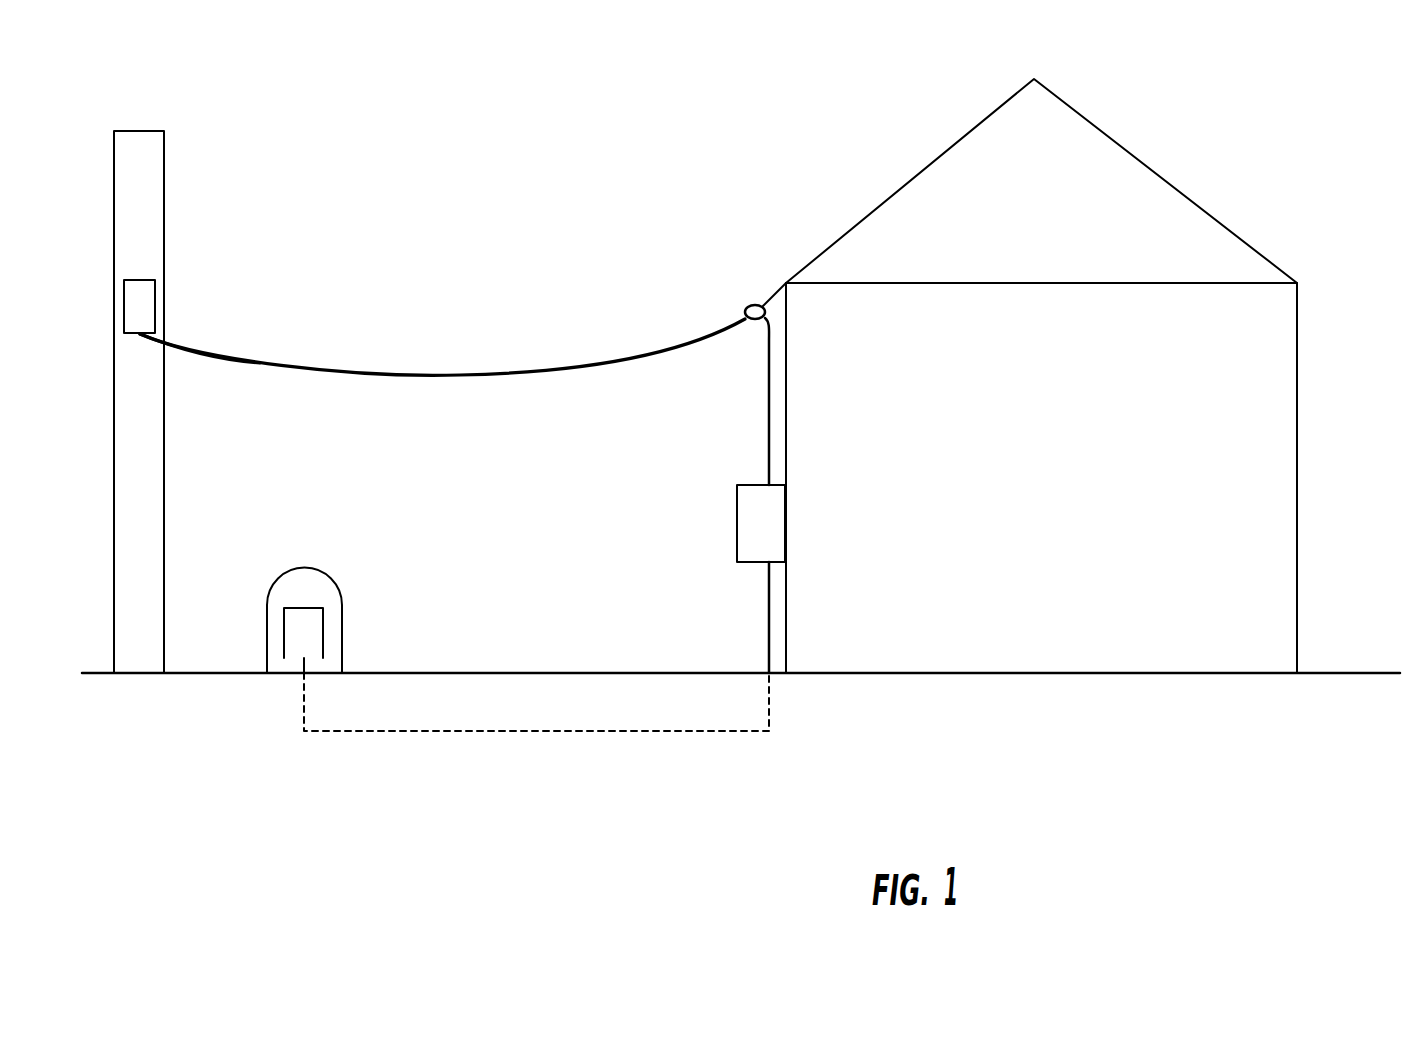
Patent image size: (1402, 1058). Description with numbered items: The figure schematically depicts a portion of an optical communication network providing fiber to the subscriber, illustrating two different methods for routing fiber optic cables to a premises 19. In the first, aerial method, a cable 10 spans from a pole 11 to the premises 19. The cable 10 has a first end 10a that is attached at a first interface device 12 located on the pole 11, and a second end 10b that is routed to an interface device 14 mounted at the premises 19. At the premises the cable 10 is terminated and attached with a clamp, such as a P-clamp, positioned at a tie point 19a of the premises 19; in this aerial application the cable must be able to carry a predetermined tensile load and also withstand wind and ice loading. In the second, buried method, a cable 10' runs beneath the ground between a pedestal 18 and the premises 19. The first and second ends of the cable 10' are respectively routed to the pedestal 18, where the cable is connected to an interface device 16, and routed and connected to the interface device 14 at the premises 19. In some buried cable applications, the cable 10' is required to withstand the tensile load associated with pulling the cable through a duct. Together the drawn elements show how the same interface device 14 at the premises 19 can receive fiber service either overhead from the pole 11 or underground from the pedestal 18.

The cable 10 is at (442, 384).
The first end 10a is at (184, 348).
The second end 10b is at (767, 473).
The cable 10' is at (536, 754).
The pole 11 is at (114, 413).
The first interface device 12 is at (139, 280).
The interface device 14 is at (731, 515).
The interface device 16 is at (306, 608).
The pedestal 18 is at (342, 642).
The premises 19 is at (1188, 344).
The tie point 19a is at (757, 305).